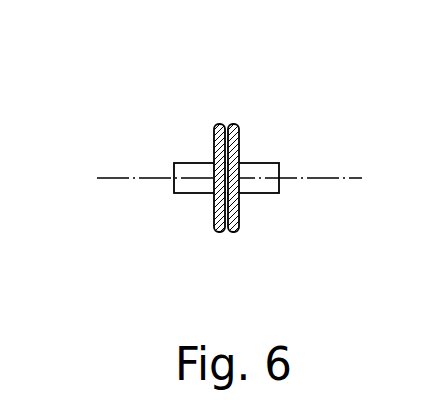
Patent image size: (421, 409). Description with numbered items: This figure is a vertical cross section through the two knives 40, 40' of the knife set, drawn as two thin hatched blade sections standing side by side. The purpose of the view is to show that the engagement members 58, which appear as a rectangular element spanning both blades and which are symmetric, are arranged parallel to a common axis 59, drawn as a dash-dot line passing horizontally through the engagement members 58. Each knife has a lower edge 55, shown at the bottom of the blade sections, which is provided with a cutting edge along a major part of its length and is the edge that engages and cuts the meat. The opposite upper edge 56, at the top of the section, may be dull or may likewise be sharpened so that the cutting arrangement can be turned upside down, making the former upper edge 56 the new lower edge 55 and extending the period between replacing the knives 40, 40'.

The knife 40 is at (280, 155).
The knife 40' is at (168, 158).
The lower edge 55 is at (226, 238).
The upper edge 56 is at (228, 110).
The engagement members 58 is at (188, 197).
The common axis 59 is at (105, 179).